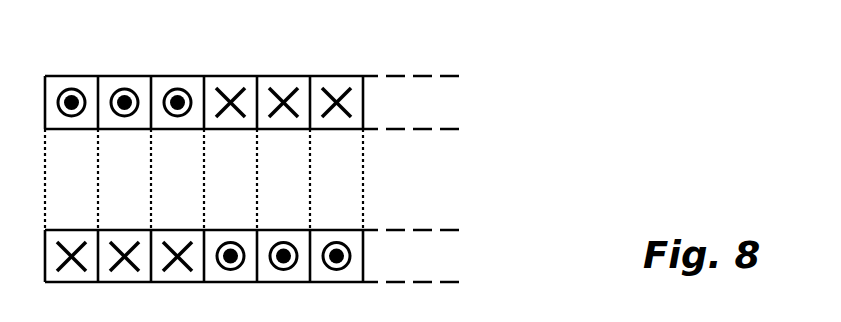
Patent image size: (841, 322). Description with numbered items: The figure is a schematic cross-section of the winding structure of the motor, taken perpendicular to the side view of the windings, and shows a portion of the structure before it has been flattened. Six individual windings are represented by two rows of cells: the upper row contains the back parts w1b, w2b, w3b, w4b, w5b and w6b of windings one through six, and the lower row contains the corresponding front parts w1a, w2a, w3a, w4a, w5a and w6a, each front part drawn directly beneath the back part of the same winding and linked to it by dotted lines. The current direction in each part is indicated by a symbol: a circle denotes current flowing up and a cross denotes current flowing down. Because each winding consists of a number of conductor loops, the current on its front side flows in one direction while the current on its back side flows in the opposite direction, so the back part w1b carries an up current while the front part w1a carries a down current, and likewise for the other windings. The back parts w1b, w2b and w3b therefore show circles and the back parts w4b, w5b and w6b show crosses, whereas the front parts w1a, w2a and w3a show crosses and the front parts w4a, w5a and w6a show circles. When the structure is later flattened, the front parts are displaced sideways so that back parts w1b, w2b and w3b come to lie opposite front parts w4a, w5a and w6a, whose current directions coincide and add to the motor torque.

The front part of winding W1 w1a is at (71, 272).
The front part of winding W2 w2a is at (124, 272).
The front part of winding W3 w3a is at (177, 272).
The front part of winding W4 w4a is at (230, 272).
The front part of winding W5 w5a is at (283, 272).
The front part of winding W6 w6a is at (336, 272).
The back part of winding W1 w1b is at (71, 87).
The back part of winding W2 w2b is at (124, 87).
The back part of winding W3 w3b is at (177, 87).
The back part of winding W4 w4b is at (230, 87).
The back part of winding W5 w5b is at (283, 87).
The back part of winding W6 w6b is at (336, 87).